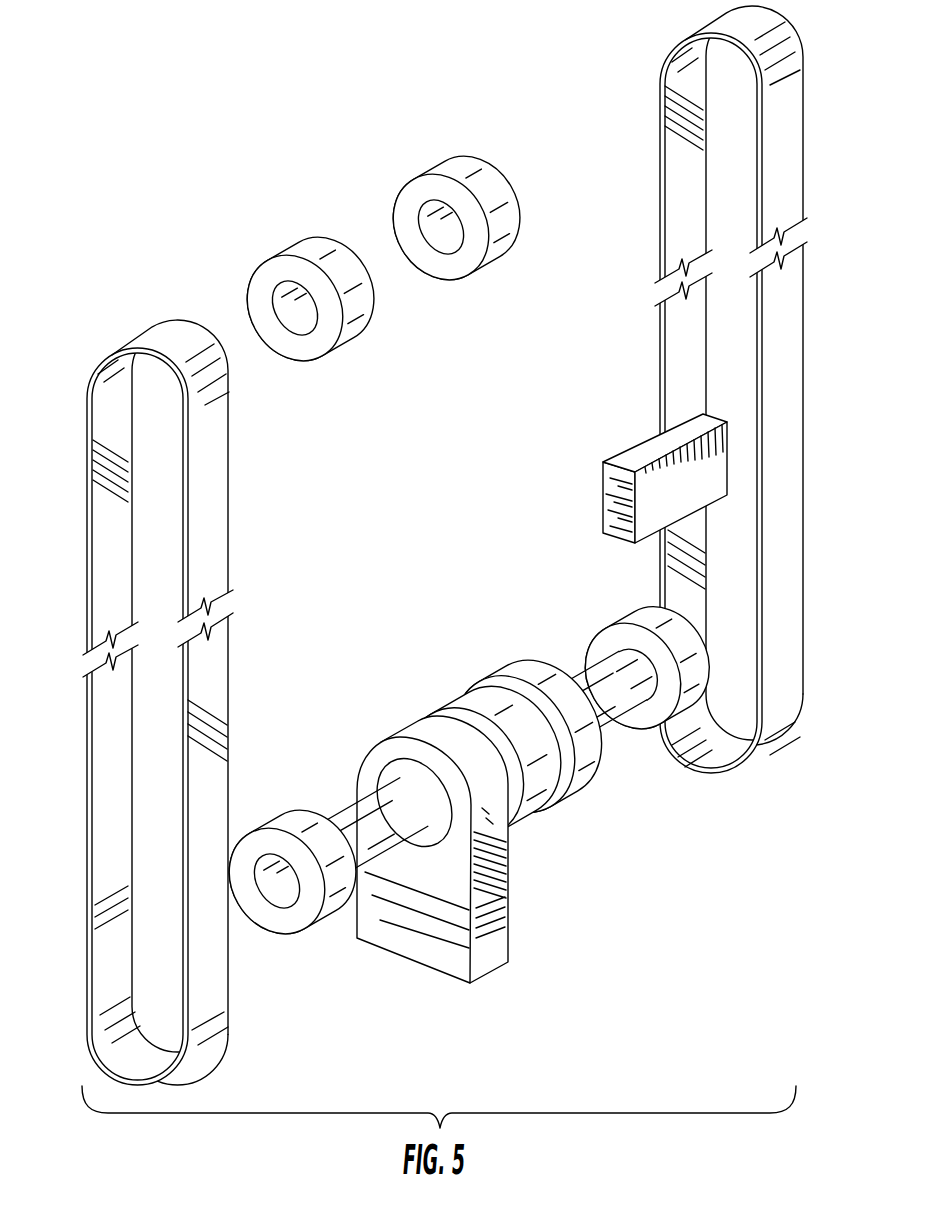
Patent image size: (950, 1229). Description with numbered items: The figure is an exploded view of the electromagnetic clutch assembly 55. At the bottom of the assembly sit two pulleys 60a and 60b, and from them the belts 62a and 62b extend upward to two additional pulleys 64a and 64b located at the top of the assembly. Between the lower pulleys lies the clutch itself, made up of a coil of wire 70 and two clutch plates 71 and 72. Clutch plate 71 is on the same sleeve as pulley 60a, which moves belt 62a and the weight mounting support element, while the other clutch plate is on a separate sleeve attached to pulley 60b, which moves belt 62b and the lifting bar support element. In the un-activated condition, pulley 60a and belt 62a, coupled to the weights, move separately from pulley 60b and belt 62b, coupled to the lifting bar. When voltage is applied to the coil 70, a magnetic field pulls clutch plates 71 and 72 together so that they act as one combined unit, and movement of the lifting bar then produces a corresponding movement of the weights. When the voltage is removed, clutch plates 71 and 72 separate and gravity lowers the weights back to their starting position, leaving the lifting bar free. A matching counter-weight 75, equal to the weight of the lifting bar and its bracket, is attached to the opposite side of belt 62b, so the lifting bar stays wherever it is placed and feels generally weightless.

The clutch assembly 55 is at (146, 141).
The pulley 60a is at (282, 818).
The pulley 60b is at (620, 620).
The belt 62a is at (88, 390).
The belt 62b is at (801, 101).
The pulley 64a is at (292, 243).
The pulley 64b is at (478, 158).
The coil of wire 70 is at (408, 947).
The clutch plate 71 is at (528, 822).
The clutch plate 72 is at (573, 793).
The counter-weight 75 is at (622, 463).